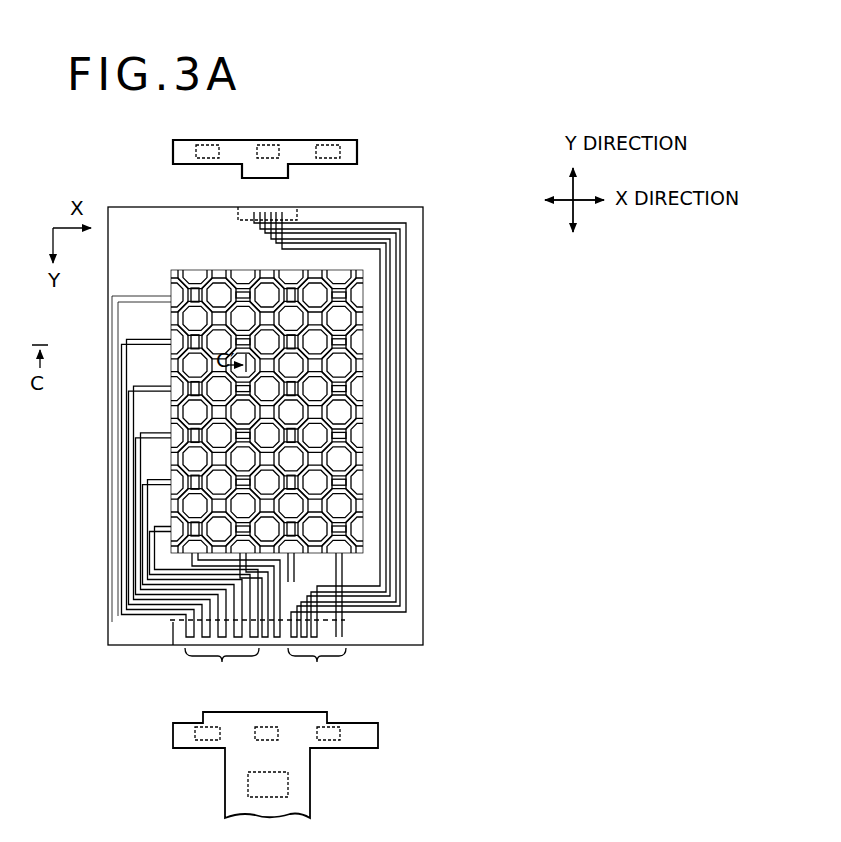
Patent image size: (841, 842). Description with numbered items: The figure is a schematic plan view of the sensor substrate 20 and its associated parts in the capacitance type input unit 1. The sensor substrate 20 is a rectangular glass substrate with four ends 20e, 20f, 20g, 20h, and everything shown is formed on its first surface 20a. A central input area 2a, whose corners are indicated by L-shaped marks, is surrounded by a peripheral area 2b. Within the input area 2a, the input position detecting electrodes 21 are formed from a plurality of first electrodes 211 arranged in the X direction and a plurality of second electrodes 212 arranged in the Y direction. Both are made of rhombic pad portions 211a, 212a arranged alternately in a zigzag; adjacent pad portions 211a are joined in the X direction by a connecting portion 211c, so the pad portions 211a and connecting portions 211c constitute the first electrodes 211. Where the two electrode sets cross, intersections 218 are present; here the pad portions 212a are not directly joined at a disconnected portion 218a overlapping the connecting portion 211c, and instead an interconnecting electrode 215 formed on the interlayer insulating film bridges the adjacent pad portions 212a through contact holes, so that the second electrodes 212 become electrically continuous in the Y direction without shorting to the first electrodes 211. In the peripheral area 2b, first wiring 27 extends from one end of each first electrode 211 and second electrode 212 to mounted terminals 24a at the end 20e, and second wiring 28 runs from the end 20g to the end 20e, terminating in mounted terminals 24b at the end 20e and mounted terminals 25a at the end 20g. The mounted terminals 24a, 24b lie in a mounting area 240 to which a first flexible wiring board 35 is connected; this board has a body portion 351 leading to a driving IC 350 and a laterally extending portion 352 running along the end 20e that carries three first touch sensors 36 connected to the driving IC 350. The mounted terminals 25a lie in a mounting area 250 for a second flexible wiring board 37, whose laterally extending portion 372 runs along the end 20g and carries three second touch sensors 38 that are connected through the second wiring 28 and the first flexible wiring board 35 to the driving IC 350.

The input unit 1 is at (484, 199).
The input area 2a is at (168, 272).
The peripheral area 2b is at (167, 358).
The sensor substrate 20 is at (430, 652).
The first surface 20a is at (380, 623).
The end 20e is at (162, 646).
The end 20f is at (424, 573).
The end 20g is at (360, 218).
The end 20h is at (108, 436).
The input position detecting electrodes 21 is at (308, 354).
The first electrodes 211 is at (345, 412).
The pad portions 211a is at (318, 381).
The connecting portion 211c is at (346, 460).
The second electrodes 212 is at (240, 272).
The pad portions 212a is at (252, 324).
The interconnecting electrode 215 is at (249, 322).
The intersections 218 is at (242, 341).
The disconnected portion 218a is at (216, 344).
The mounted terminals 24a is at (191, 510).
The mounted terminals 24b is at (317, 665).
The mounting area 240 is at (281, 646).
The mounted terminals 25a is at (283, 212).
The mounting area 250 is at (225, 222).
The first wiring 27 is at (152, 598).
The second wiring 28 is at (402, 342).
The first flexible wiring board 35 is at (305, 772).
The driving IC 350 is at (290, 790).
The body portion 351 is at (230, 788).
The laterally extending portion 352 is at (370, 732).
The first touch sensors 36 is at (256, 742).
The second flexible wiring board 37 is at (343, 139).
The laterally extending portion 372 is at (358, 152).
The second touch sensors 38 is at (327, 145).